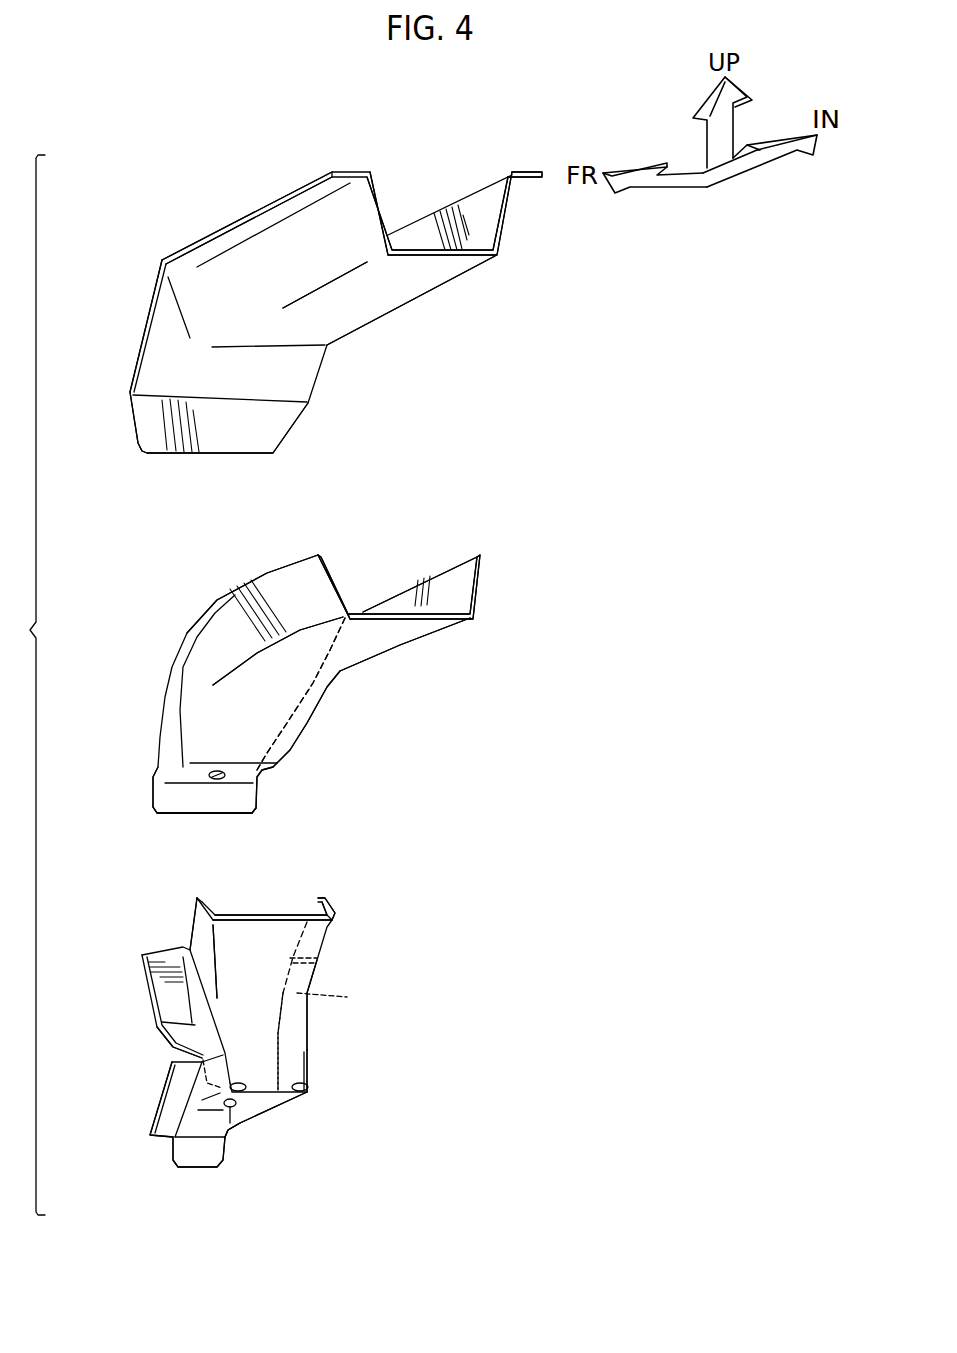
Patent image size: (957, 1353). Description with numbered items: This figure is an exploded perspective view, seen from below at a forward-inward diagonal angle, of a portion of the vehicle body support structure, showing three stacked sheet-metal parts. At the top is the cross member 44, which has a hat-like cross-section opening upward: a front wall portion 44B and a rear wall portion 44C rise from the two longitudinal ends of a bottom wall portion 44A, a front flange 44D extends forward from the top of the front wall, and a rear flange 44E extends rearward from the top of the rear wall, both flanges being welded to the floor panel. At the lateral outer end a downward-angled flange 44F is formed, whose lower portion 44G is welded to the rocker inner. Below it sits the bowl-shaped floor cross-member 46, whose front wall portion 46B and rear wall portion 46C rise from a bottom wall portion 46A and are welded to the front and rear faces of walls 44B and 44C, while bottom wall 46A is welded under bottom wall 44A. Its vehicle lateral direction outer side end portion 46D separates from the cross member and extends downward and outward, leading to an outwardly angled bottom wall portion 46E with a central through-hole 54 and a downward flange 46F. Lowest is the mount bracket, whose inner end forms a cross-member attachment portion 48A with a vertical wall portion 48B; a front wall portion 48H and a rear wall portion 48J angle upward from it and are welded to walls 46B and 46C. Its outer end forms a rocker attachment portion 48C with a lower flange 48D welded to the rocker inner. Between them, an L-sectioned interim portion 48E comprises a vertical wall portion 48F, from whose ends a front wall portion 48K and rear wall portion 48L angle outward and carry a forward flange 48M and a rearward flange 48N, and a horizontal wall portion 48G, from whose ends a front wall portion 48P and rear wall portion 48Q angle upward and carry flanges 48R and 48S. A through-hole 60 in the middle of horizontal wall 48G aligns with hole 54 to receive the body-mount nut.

The cross member 44 is at (455, 292).
The bottom wall portion 44A is at (387, 290).
The front wall portion 44B is at (327, 267).
The rear wall portion 44C is at (460, 210).
The front flange 44D is at (257, 225).
The rear flange 44E is at (517, 185).
The flange 44F is at (158, 363).
The lower portion 44G is at (222, 438).
The floor cross-member 46 is at (392, 655).
The bottom wall portion 46A is at (397, 630).
The front wall portion 46B is at (282, 585).
The rear wall portion 46C is at (442, 585).
The vehicle lateral direction outer side end portion 46D is at (282, 720).
The bottom wall portion 46E is at (253, 777).
The flange 46F is at (220, 800).
The through-hole 54 is at (207, 777).
The cross-member attachment portion 48A is at (330, 932).
The vertical wall portion 48B is at (260, 933).
The rocker attachment portion 48C is at (143, 1133).
The lower flange 48D is at (205, 1157).
The interim portion 48E is at (328, 1015).
The vertical wall portion 48F is at (268, 1022).
The horizontal wall portion 48G is at (272, 1102).
The front wall portion 48H is at (197, 923).
The rear wall portion 48J is at (322, 900).
The front wall portion 48K is at (208, 1013).
The rear wall portion 48L is at (347, 992).
The flange 48M is at (160, 992).
The flange 48N is at (317, 962).
The front wall portion 48P is at (207, 1067).
The rear wall portion 48Q is at (308, 1072).
The flange 48R is at (165, 1113).
The flange 48S is at (237, 1130).
The through-hole 60 is at (228, 1110).